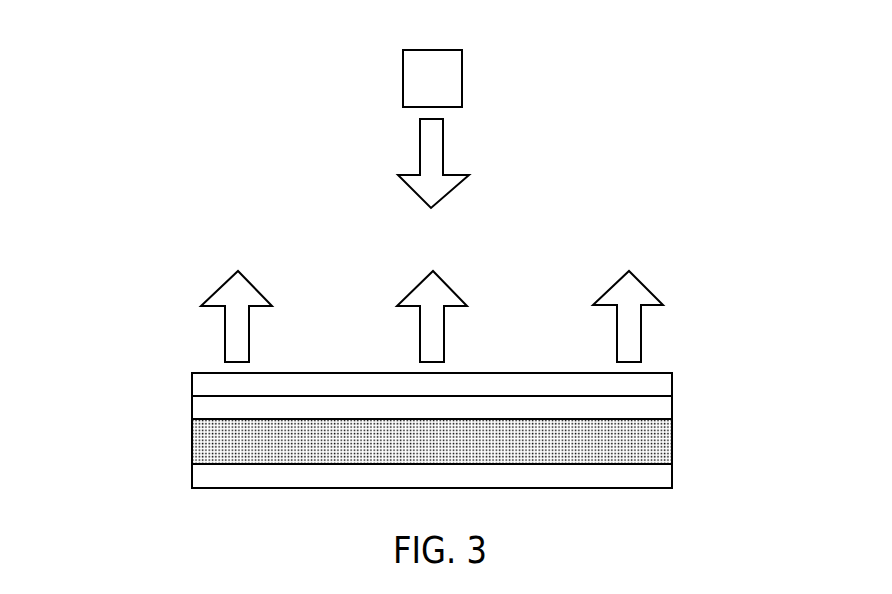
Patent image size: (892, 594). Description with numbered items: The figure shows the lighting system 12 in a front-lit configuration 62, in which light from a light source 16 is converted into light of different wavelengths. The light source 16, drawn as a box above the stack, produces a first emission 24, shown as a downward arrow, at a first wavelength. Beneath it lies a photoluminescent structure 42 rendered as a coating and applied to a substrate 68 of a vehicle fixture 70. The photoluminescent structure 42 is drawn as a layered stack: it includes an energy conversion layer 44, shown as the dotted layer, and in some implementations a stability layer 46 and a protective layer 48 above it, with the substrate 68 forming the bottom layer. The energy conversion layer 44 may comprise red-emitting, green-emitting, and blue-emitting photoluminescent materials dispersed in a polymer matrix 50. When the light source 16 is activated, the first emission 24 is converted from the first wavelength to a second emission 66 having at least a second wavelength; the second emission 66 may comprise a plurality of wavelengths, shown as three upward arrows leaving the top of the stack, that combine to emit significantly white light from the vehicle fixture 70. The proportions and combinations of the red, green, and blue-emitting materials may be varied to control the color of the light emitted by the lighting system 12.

The lighting system 12 is at (210, 139).
The light source 16 is at (444, 87).
The first emission 24 is at (422, 142).
The photoluminescent structure 42 is at (124, 427).
The energy conversion layer 44 is at (666, 440).
The stability layer 46 is at (667, 405).
The protective layer 48 is at (667, 385).
The polymer matrix 50 is at (212, 438).
The front-lit configuration 62 is at (546, 187).
The second emission 66 is at (260, 290).
The substrate 68 is at (667, 474).
The vehicle fixture 70 is at (152, 351).